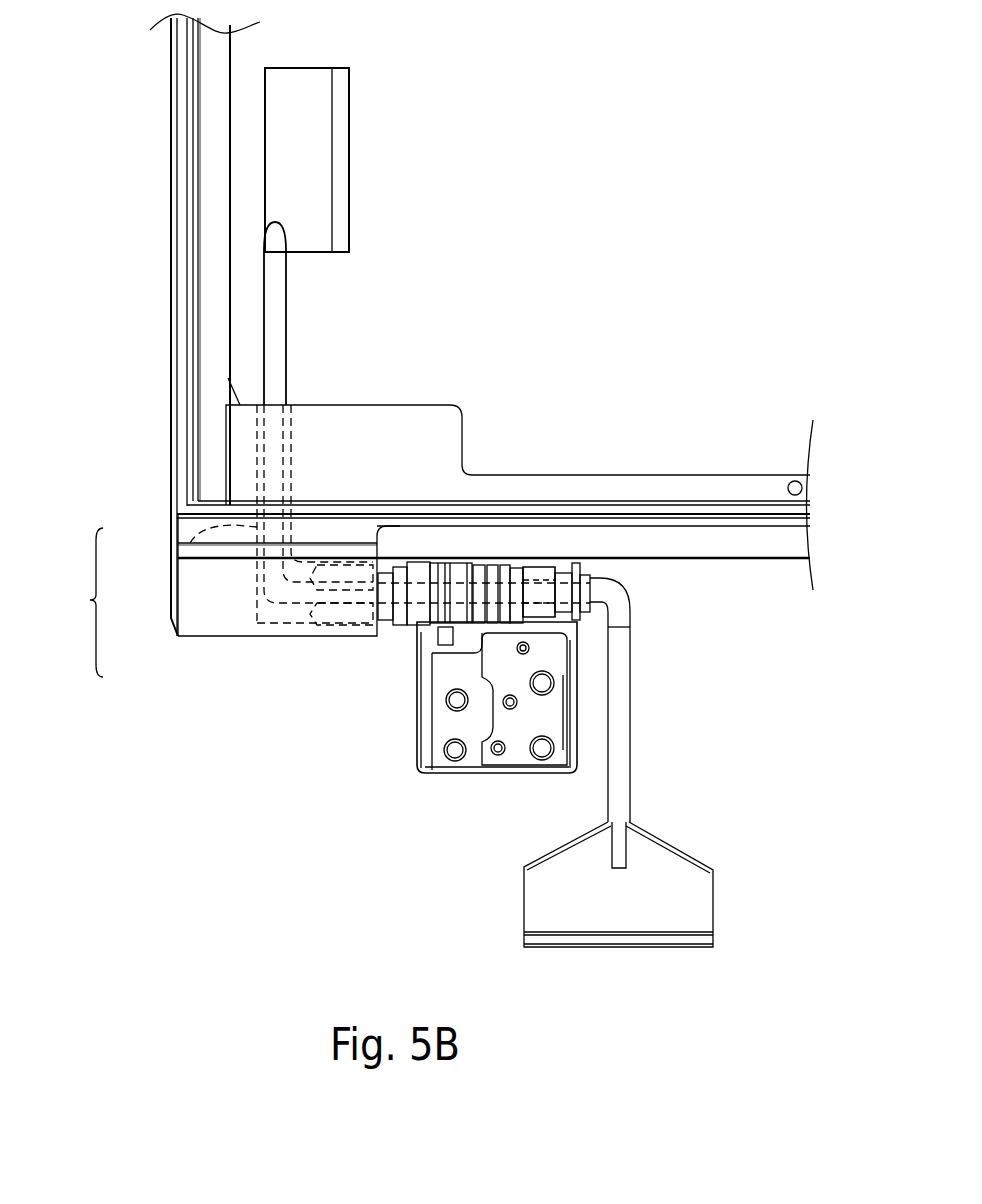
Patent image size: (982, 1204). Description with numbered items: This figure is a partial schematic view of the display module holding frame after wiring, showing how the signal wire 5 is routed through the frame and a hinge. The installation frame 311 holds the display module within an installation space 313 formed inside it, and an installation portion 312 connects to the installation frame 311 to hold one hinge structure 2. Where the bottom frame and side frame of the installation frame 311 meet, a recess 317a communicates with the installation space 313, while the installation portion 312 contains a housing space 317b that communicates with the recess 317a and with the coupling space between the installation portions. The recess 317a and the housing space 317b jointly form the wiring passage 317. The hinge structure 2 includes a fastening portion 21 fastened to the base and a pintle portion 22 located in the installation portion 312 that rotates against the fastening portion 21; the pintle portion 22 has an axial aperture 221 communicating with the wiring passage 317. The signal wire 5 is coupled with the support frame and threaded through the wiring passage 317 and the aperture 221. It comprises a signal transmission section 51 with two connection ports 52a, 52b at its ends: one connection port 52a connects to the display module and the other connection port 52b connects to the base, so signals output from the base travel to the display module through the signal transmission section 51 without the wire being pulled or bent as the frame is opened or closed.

The installation frame 311 is at (172, 68).
The installation portion 312 is at (367, 638).
The installation space 313 is at (305, 320).
The wiring passage 317 is at (212, 602).
The recess 317a is at (190, 545).
The housing space 317b is at (277, 623).
The signal transmission section 51 is at (293, 606).
The connection port 52a is at (315, 118).
The connection port 52b is at (645, 922).
The hinge structure 2 is at (462, 777).
The fastening portion 21 is at (550, 710).
The pintle portion 22 is at (625, 595).
The axial aperture 221 is at (542, 565).
The signal wire 5 is at (630, 778).